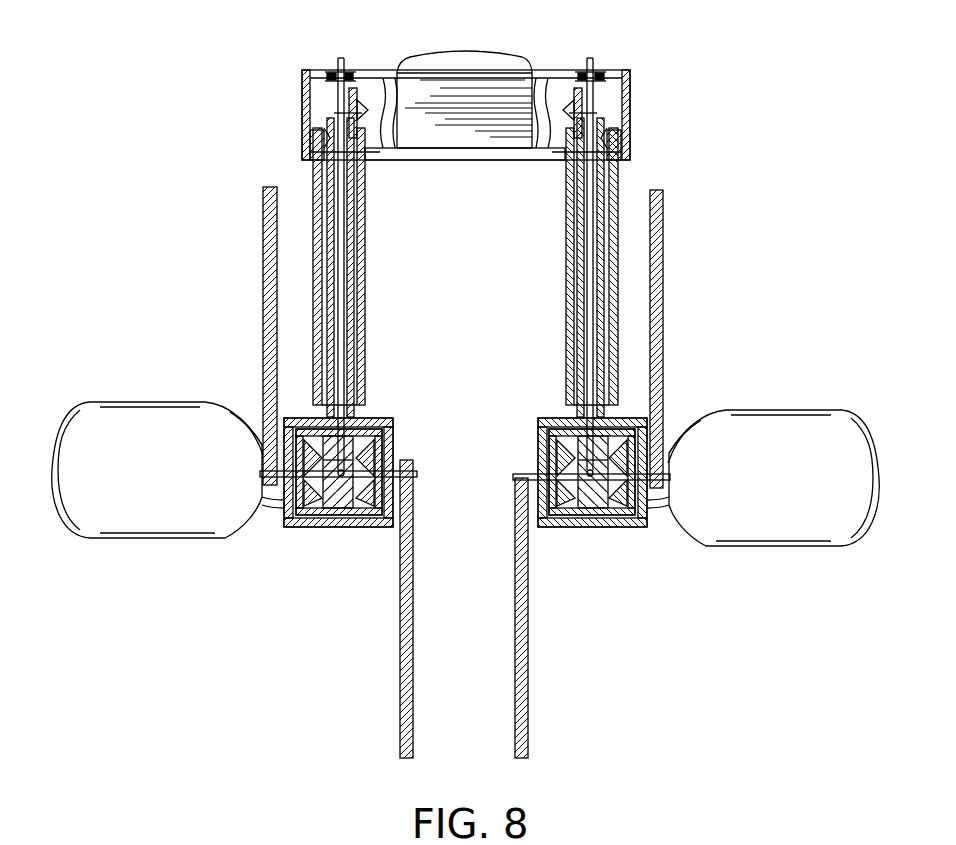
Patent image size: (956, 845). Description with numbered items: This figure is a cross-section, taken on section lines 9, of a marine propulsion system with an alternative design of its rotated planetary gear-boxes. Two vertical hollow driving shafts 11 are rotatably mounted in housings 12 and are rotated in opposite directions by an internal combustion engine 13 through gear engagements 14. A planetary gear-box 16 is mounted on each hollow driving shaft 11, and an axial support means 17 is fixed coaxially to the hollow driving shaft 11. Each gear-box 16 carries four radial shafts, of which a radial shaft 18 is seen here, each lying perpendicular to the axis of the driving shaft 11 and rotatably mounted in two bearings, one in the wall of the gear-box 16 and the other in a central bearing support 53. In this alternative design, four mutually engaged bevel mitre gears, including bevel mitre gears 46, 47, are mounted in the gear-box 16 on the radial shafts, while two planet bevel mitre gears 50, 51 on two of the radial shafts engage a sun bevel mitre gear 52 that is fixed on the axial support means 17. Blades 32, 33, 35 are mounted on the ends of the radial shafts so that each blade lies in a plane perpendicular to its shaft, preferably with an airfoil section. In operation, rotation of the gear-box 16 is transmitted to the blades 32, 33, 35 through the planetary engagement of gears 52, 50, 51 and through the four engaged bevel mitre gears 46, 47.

The section line 9- 9 is at (43, 463).
The hollow driving shaft 11 is at (572, 299).
The housing 12 is at (566, 336).
The internal combustion engine 13 is at (441, 72).
The gear engagement 14 is at (350, 97).
The planetary gear-box 16 is at (291, 528).
The axial support means 17 is at (338, 105).
The radial shaft 18 is at (262, 440).
The blade 32 is at (265, 264).
The blade 33 is at (400, 710).
The blade 35 is at (138, 535).
The bevel mitre gear 46 is at (312, 528).
The bevel mitre gear 47 is at (357, 528).
The planet bevel mitre gear 50 is at (264, 528).
The planet bevel mitre gear 51 is at (392, 450).
The sun bevel mitre gear 52 is at (370, 432).
The central bearing support 53 is at (342, 528).